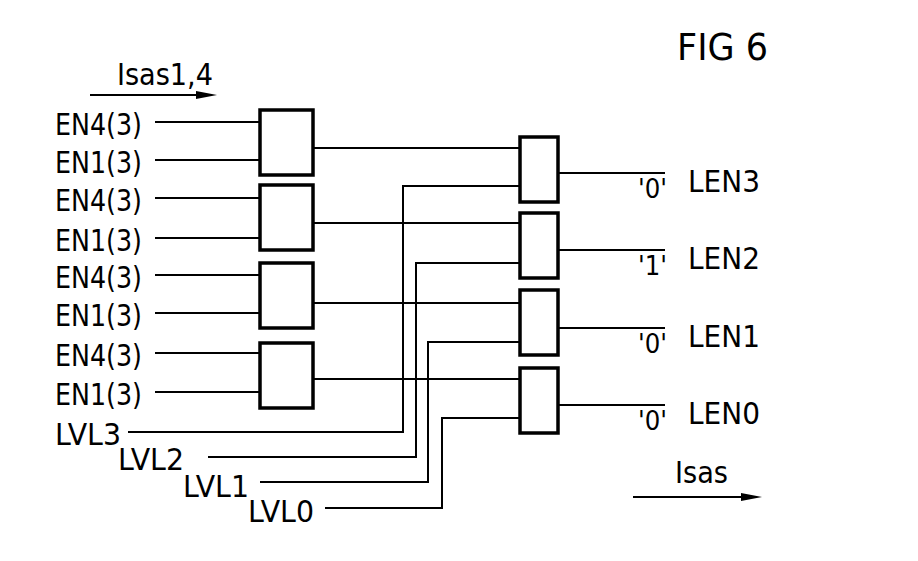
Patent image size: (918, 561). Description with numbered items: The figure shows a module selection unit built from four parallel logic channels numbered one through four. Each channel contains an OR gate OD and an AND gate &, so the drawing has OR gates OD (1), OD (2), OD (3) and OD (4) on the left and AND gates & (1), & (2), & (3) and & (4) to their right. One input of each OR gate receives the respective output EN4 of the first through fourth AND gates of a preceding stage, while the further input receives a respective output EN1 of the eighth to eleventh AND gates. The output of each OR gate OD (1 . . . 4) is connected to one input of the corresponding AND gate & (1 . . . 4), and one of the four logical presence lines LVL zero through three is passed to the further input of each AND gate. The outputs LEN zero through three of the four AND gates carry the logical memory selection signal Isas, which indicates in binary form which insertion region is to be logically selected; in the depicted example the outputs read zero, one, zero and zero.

The fourth OR gate OD and fourth AND gate 4 is at (431, 156).
The third OR gate OD and third AND gate 3 is at (431, 231).
The second OR gate OD and second AND gate 2 is at (431, 309).
The first OR gate OD and first AND gate 1 is at (431, 387).